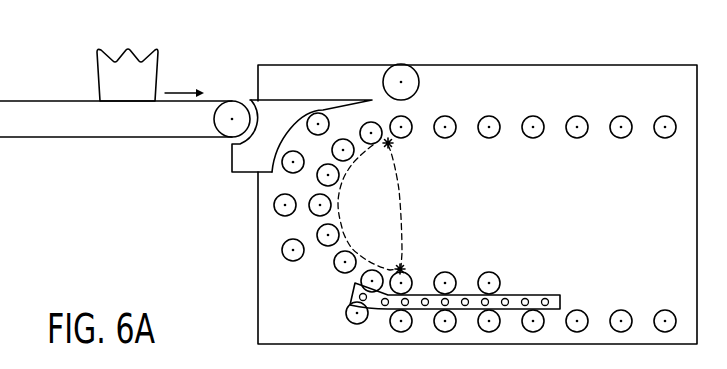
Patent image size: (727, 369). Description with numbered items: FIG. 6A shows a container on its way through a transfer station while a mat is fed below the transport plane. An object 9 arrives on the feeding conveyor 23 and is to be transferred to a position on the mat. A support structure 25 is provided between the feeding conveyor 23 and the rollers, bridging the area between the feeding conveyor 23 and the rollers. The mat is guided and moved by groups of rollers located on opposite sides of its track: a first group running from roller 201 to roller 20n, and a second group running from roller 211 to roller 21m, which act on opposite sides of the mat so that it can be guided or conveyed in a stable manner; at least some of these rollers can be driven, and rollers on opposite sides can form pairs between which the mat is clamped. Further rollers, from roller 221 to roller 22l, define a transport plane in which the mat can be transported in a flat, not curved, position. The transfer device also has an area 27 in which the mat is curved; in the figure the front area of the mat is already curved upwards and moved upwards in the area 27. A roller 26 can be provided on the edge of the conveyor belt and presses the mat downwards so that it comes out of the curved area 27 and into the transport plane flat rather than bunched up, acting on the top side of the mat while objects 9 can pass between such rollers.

The feeding conveyor 23 is at (81, 99).
The object 9 is at (121, 92).
The support structure 25 is at (243, 166).
The roller 20n is at (325, 110).
The roller 26 is at (413, 65).
The roller 221 is at (405, 137).
The roller 21m is at (374, 142).
The area 27 is at (360, 250).
The roller 211 is at (489, 272).
The roller 22l is at (660, 139).
The roller 201 is at (665, 309).